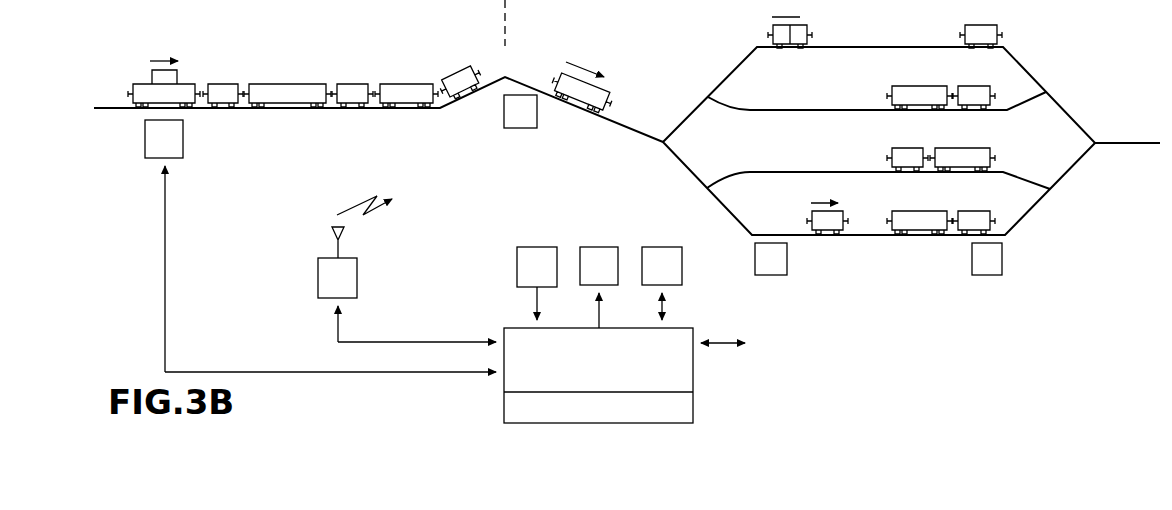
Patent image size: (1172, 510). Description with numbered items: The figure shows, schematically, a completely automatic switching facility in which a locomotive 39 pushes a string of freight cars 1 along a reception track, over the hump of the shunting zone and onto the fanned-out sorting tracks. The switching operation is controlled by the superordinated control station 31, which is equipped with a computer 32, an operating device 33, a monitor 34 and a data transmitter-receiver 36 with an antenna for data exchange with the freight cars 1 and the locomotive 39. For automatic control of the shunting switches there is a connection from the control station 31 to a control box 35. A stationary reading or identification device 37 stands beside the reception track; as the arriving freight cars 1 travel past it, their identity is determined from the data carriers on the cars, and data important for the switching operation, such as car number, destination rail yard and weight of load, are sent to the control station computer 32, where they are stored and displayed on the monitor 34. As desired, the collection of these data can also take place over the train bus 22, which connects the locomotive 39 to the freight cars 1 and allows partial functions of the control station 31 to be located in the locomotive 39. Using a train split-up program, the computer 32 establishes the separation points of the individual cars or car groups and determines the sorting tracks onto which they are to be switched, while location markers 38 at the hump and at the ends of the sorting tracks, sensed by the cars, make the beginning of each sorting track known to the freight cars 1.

The freight car 1 is at (546, 125).
The train bus 22 is at (745, 343).
The control station 31 is at (598, 375).
The computer 32 is at (598, 360).
The operating device 33 is at (537, 283).
The monitor 34 is at (599, 287).
The control box 35 is at (662, 283).
The data transmitter-receiver 36 is at (407, 269).
The identification device 37 is at (320, 246).
The location marker 38 is at (753, 185).
The locomotive 39 is at (164, 84).